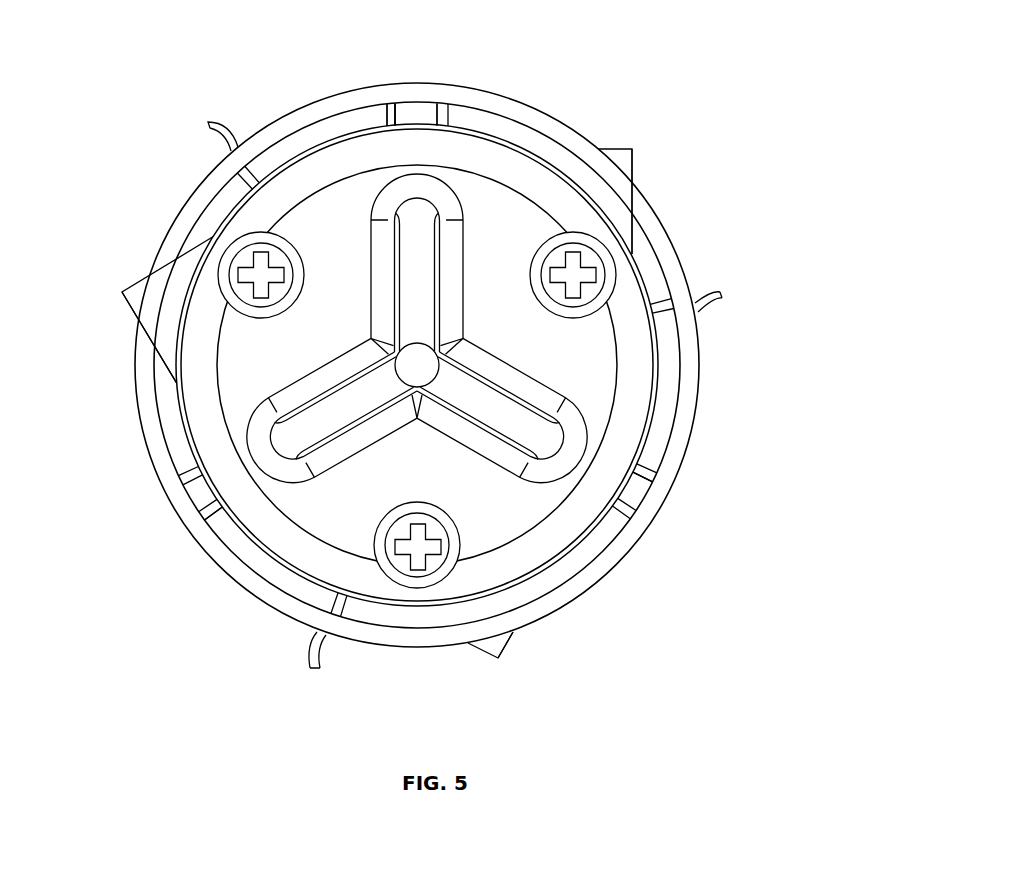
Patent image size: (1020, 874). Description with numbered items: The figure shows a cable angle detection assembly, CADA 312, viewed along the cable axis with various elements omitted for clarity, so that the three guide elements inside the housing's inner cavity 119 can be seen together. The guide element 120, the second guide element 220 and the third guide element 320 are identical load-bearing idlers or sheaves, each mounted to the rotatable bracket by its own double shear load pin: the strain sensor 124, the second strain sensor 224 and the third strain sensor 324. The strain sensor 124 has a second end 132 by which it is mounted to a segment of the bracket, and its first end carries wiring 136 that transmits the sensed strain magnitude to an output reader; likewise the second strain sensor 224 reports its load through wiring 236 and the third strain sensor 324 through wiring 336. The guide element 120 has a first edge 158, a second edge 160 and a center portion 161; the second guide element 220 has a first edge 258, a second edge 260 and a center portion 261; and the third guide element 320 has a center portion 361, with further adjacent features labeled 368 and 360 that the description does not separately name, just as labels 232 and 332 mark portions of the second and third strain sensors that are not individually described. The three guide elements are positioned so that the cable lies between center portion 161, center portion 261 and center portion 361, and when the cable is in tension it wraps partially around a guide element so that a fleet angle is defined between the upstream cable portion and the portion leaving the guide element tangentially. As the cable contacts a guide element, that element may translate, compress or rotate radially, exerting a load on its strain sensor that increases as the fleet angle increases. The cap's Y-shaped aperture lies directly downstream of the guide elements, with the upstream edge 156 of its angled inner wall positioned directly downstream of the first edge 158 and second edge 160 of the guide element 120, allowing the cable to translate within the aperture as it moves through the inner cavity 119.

The cable angle detection assembly (CADA) 312 is at (110, 113).
The wiring 336 is at (207, 118).
The tab edge 368 is at (388, 103).
The center portion 361 is at (419, 112).
The tab edge 360 is at (449, 104).
The third guide element 320 is at (418, 228).
The second strain sensor 224 is at (659, 127).
The tab side edge 232 is at (632, 173).
The inner cavity 119 is at (418, 366).
The third strain sensor 324 is at (129, 255).
The tab side edge 332 is at (122, 293).
The wiring 136 is at (722, 295).
The second guide element 220 is at (432, 255).
The upstream edge 156 is at (545, 413).
The guide element 120 is at (542, 437).
The second edge 260 is at (180, 470).
The first edge 158 is at (648, 473).
The center portion 261 is at (198, 499).
The center portion 161 is at (645, 498).
The first edge 258 is at (208, 518).
The second edge 160 is at (625, 521).
The strain sensor 124 is at (534, 646).
The wiring 236 is at (313, 667).
The second end 132 is at (482, 644).